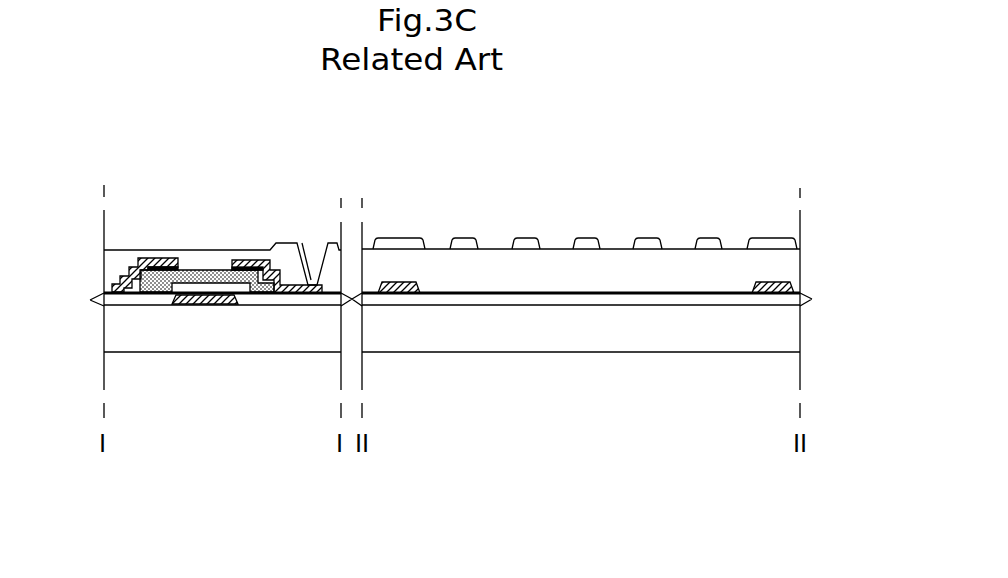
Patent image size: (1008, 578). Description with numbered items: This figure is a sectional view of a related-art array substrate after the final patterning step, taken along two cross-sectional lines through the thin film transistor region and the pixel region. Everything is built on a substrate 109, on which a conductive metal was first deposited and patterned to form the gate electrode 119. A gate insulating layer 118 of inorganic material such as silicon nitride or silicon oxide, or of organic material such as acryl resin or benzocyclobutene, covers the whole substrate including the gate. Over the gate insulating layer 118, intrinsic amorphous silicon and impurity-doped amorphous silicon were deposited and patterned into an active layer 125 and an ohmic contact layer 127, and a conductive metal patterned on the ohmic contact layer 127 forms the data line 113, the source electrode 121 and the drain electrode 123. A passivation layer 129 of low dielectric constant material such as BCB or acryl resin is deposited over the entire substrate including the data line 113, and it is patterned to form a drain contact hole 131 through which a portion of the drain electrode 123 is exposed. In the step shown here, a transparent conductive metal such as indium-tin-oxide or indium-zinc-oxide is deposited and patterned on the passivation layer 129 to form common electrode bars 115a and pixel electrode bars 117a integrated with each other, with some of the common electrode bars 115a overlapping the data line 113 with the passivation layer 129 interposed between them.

The substrate 109 is at (495, 333).
The data line 113 is at (397, 294).
The common electrode bars 115a is at (525, 240).
The pixel electrode bars 117a is at (710, 246).
The gate insulating layer 118 is at (118, 298).
The gate electrode 119 is at (182, 305).
The source electrode 121 is at (151, 258).
The drain electrode 123 is at (257, 262).
The active layer 125 is at (226, 283).
The ohmic contact layer 127 is at (247, 260).
The passivation layer 129 is at (194, 249).
The drain contact hole 131 is at (313, 272).